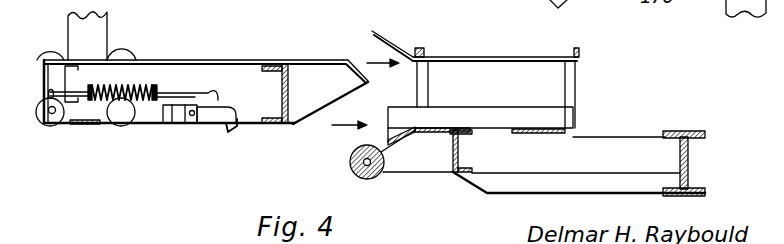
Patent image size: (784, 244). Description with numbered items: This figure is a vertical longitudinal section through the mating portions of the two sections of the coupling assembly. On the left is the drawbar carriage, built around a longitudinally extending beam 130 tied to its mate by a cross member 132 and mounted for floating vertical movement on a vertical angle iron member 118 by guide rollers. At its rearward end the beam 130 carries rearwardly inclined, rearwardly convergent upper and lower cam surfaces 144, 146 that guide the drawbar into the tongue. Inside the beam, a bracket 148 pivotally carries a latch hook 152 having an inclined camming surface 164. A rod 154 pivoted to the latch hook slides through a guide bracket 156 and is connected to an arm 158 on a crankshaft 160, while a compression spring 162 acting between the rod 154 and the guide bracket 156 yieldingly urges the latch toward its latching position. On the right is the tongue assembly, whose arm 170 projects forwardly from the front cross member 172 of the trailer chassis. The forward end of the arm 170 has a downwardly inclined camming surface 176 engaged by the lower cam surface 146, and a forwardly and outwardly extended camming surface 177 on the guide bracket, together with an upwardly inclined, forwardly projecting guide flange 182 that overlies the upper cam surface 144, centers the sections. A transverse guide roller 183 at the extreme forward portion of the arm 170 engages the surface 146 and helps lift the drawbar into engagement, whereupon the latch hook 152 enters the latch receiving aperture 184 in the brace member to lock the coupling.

The vertical angle iron member 118 is at (90, 47).
The longitudinally extending beam 130 is at (185, 60).
The cross member 132 is at (290, 78).
The upper cam surface 144 is at (362, 87).
The lower cam surface 146 is at (318, 124).
The bracket 148 is at (177, 123).
The latch hook 152 is at (211, 116).
The rod 154 is at (176, 96).
The guide bracket 156 is at (90, 83).
The arm 158 is at (39, 116).
The crankshaft 160 is at (57, 124).
The compression spring 162 is at (128, 125).
The inclined camming surface 164 is at (237, 128).
The arm 170 is at (605, 142).
The front cross member 172 is at (690, 165).
The downwardly inclined camming surface 176 is at (418, 133).
The camming surface 177 is at (473, 77).
The guide flange 182 is at (390, 42).
The guide roller 183 is at (370, 180).
The latch receiving aperture 184 is at (505, 133).